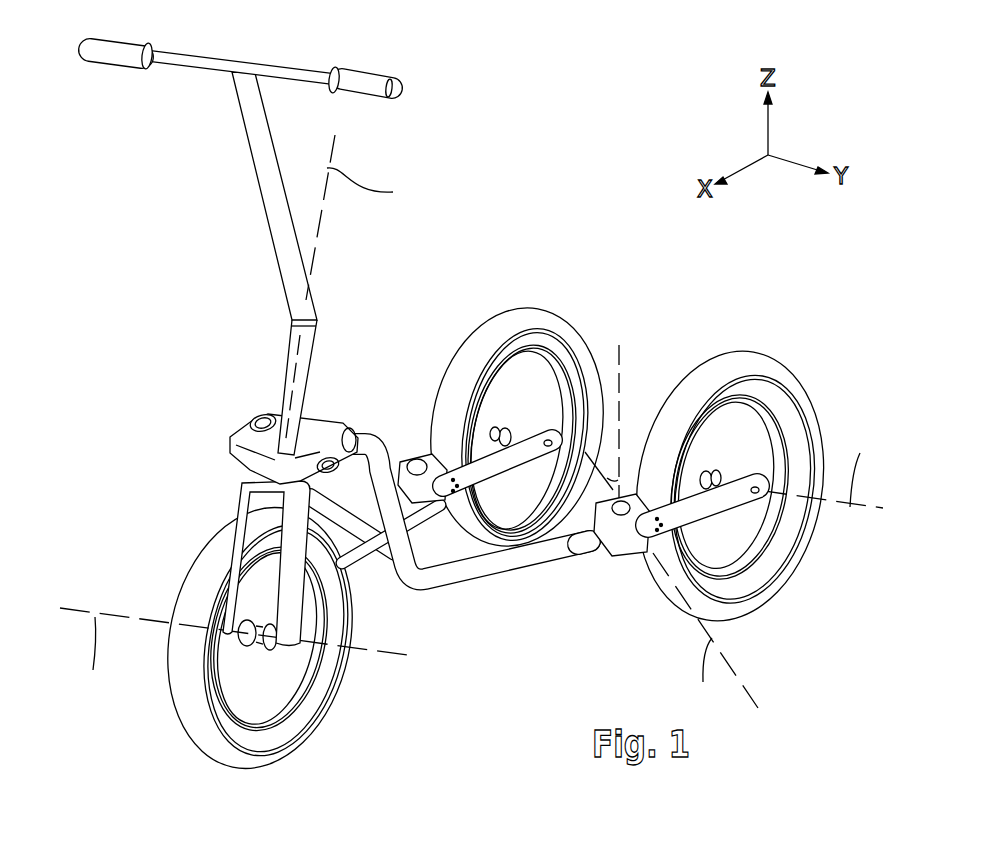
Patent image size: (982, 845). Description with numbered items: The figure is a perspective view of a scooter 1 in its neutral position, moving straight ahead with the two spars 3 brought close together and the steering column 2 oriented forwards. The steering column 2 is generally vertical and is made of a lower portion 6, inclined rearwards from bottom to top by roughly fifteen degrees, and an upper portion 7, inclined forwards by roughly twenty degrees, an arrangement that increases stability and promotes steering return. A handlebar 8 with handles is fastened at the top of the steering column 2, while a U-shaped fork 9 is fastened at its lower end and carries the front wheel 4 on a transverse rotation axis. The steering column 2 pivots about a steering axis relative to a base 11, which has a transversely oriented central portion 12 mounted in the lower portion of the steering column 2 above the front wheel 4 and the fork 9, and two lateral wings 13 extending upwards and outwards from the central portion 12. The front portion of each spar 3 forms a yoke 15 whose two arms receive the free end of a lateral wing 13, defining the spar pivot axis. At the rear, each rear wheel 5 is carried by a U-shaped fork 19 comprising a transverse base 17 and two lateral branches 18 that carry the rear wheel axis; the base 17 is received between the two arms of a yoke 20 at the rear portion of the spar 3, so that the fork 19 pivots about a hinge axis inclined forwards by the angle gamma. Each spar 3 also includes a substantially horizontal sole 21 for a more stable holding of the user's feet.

The scooter 1 is at (471, 405).
The steering column 2 is at (258, 242).
The spar 3 is at (457, 579).
The front wheel 4 is at (195, 722).
The rear wheel 5 is at (570, 357).
The lower portion 6 is at (293, 358).
The upper portion 7 is at (253, 128).
The handlebar 8 is at (193, 60).
The fork 9 is at (288, 608).
The base 11 is at (232, 448).
The central portion 12 is at (272, 466).
The lateral wing 13 is at (245, 428).
The yoke 15 is at (343, 427).
The base 17 is at (630, 540).
The lateral branch 18 is at (717, 510).
The fork 19 is at (513, 435).
The yoke 20 is at (591, 535).
The sole 21 is at (452, 570).